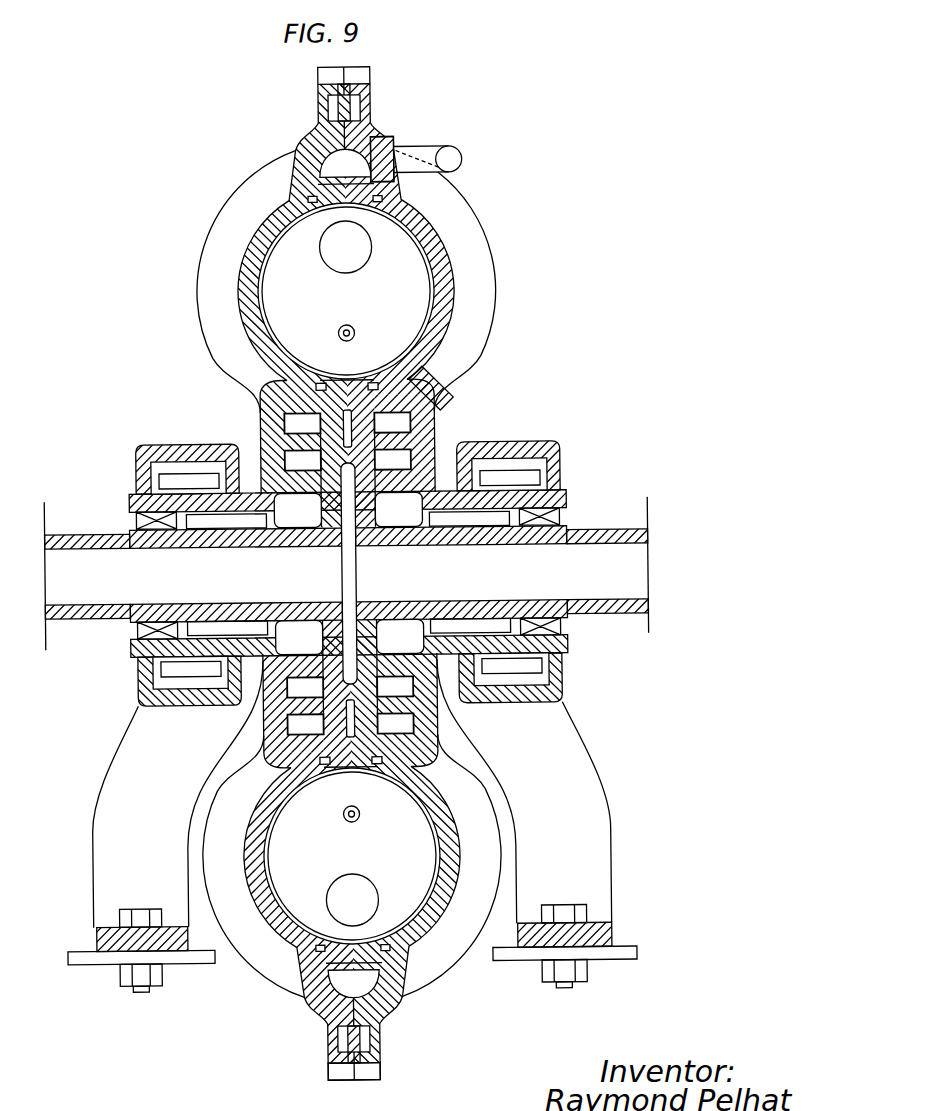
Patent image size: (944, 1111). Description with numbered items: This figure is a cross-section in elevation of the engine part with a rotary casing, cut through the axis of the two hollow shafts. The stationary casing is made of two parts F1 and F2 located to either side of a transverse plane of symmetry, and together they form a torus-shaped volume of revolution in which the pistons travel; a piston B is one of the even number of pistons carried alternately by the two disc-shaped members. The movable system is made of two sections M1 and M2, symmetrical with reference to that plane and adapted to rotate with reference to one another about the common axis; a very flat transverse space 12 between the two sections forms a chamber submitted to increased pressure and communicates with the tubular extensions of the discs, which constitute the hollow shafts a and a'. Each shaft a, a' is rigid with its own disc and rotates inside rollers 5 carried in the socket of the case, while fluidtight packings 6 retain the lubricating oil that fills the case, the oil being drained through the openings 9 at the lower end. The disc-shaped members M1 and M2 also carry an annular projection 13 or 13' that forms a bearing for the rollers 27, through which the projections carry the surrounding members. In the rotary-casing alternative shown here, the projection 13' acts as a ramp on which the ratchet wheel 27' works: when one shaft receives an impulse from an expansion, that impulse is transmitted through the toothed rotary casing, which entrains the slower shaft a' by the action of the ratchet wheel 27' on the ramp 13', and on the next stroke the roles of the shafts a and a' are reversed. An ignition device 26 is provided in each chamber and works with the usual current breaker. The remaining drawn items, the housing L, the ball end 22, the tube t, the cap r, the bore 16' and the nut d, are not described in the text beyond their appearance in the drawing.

The casing part F1 is at (309, 170).
The casing part F2 is at (434, 231).
The casing L is at (241, 222).
The stem ball end 22 is at (356, 157).
The tube t is at (459, 153).
The ratchet wheel 27' is at (354, 481).
The rollers 27 is at (342, 520).
The oil draining openings 9 is at (360, 406).
The annular projection 13 is at (472, 555).
The annular projection 13' is at (472, 555).
The rollers 5 is at (464, 513).
The bearing cap r is at (554, 444).
The fluidtight packings 6 is at (521, 522).
The tubular shaft a is at (472, 555).
The tubular shaft a' is at (472, 555).
The transverse space 12 is at (260, 709).
The ignition device 26 is at (344, 818).
The bore 16' is at (419, 938).
The movable section M1 is at (318, 988).
The movable section M2 is at (386, 993).
The piston B is at (100, 960).
The nut d is at (332, 1068).